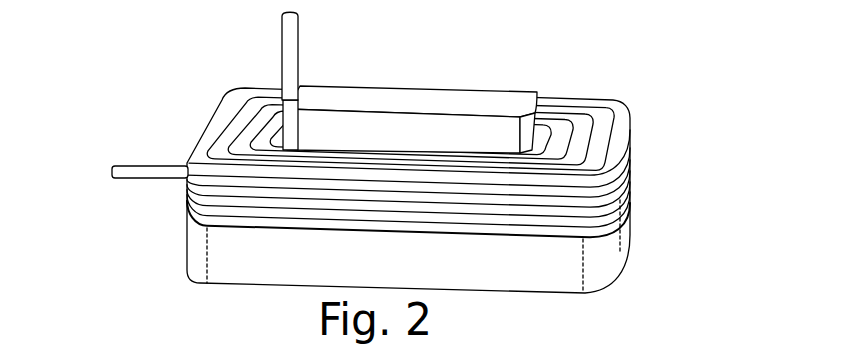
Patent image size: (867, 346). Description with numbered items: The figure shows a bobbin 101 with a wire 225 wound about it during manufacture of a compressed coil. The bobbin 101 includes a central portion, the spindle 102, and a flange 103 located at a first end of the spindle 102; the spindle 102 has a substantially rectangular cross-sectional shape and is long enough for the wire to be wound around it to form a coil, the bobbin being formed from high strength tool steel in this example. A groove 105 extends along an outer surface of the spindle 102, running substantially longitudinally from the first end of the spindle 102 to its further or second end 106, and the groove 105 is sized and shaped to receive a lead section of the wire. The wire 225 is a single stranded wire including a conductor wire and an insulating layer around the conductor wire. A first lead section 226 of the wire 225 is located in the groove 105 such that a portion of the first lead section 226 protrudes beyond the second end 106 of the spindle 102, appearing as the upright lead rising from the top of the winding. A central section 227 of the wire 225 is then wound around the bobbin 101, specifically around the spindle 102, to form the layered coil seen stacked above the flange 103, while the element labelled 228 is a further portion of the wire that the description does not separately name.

The bobbin 101 is at (644, 219).
The spindle 102 is at (485, 128).
The flange 103 is at (598, 272).
The groove 105 is at (303, 95).
The second end 106 is at (417, 98).
The wire 225 is at (644, 113).
The first lead section 226 is at (281, 70).
The central section 227 is at (206, 202).
The lead tab 228 is at (146, 172).